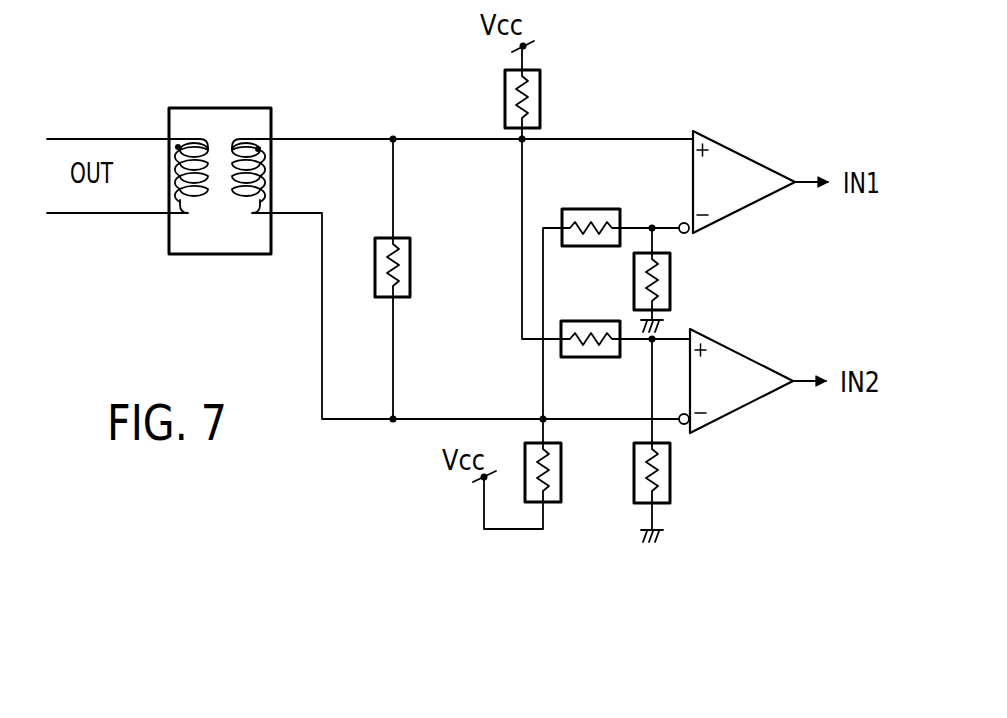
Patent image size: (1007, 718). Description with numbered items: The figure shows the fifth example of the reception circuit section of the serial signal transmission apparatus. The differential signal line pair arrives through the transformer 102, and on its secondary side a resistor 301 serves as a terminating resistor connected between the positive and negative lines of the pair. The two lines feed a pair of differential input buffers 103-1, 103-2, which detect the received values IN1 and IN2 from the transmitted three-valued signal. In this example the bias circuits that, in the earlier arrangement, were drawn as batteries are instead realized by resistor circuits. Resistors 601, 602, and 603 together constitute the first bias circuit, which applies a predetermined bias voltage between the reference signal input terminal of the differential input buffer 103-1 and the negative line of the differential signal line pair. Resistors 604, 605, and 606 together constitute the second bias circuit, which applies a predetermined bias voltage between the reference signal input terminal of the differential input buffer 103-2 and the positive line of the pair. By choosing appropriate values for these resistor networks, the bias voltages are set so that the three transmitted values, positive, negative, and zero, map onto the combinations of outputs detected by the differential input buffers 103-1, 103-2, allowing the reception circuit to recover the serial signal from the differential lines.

The transformer 102 is at (182, 255).
The terminating resistor 301 is at (375, 270).
The resistor 601 is at (553, 502).
The resistor 602 is at (588, 209).
The resistor 603 is at (672, 261).
The resistor 604 is at (505, 96).
The resistor 605 is at (590, 358).
The resistor 606 is at (670, 465).
The differential input buffer 103-1 is at (758, 123).
The differential input buffer 103-2 is at (758, 323).